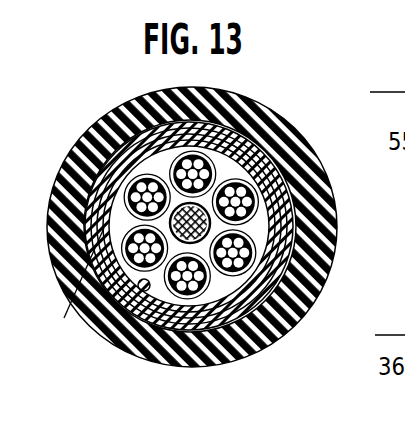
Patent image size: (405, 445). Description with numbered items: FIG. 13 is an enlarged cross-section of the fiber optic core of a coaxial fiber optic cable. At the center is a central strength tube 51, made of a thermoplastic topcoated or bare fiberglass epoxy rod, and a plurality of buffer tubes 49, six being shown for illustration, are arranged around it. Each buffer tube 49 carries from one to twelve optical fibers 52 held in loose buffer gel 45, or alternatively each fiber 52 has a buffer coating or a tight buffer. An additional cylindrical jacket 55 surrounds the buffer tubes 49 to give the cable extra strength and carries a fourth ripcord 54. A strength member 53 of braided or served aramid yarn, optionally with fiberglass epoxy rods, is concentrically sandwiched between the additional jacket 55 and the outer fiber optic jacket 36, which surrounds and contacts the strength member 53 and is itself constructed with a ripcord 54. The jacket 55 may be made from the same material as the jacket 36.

The fiber optic jacket 36 is at (150, 120).
The loose buffer gel 45 is at (258, 184).
The buffer tube 49 is at (208, 233).
The central strength tube 51 is at (258, 315).
The optical fiber 52 is at (282, 226).
The strength member 53 is at (290, 197).
The ripcord 54 is at (140, 290).
The additional cylindrical jacket 55 is at (296, 258).